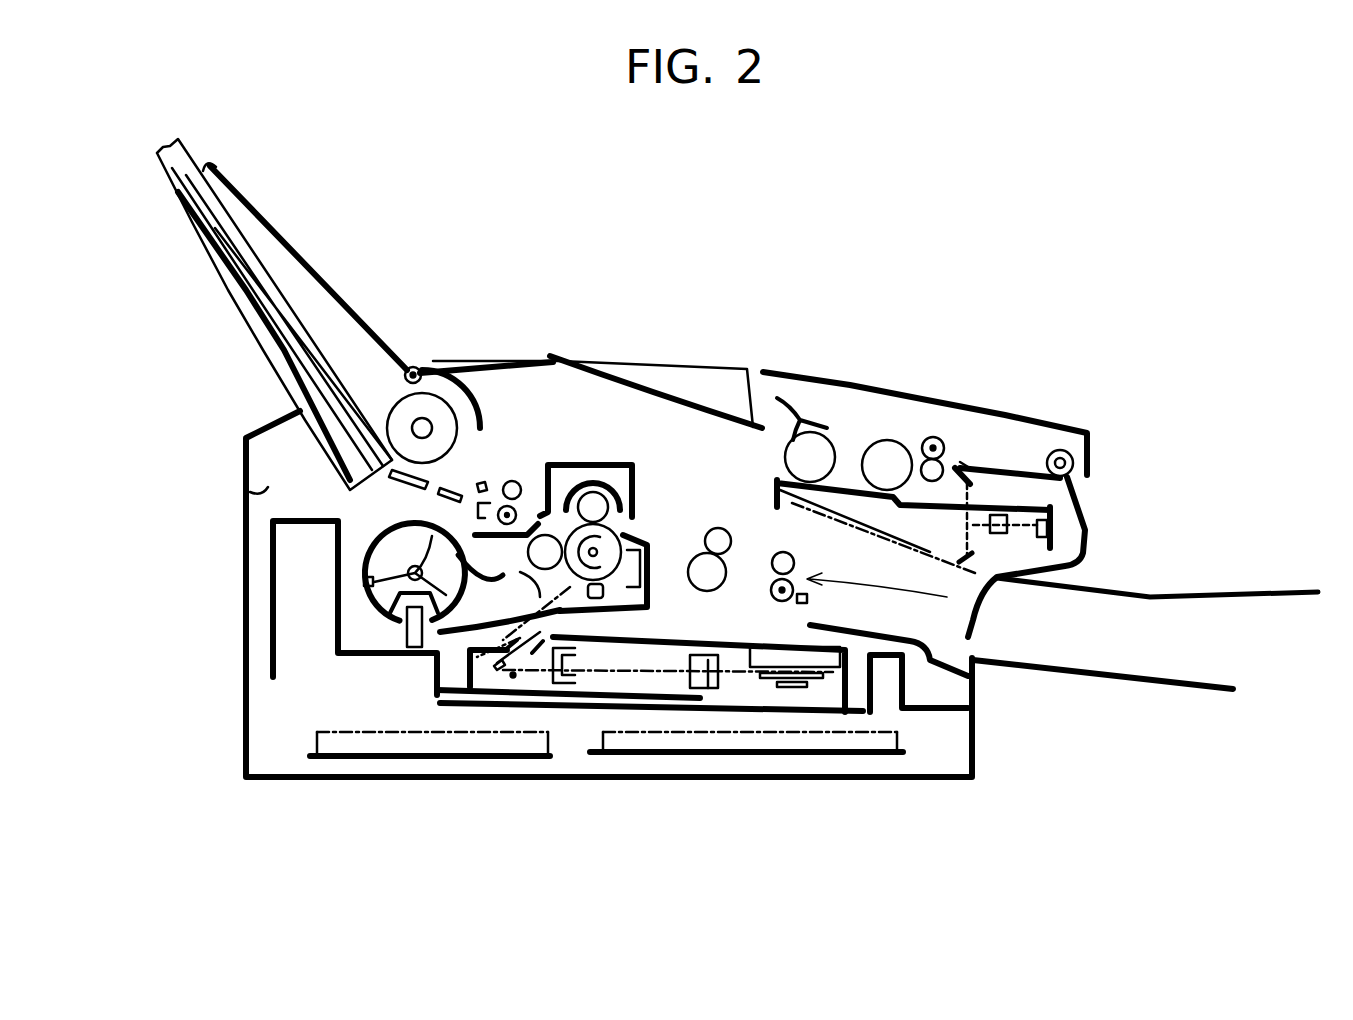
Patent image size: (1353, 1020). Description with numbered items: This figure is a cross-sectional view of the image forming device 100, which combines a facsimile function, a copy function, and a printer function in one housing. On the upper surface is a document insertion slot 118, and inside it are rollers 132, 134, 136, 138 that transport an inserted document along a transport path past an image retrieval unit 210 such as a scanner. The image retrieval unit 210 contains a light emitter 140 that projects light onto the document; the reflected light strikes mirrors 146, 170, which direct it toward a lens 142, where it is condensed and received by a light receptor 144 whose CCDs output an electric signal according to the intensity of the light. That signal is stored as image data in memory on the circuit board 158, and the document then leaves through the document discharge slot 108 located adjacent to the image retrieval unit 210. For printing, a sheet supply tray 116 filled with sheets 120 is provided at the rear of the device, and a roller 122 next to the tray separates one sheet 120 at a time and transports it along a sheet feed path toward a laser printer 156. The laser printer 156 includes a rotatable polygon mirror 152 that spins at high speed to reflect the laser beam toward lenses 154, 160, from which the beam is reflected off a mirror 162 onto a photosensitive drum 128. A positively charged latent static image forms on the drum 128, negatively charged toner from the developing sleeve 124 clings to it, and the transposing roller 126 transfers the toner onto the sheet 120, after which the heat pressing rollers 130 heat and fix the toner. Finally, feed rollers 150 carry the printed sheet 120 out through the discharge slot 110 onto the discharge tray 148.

The image forming device 100 is at (876, 264).
The document discharge slot 108 is at (1073, 477).
The discharge slot 110 is at (973, 649).
The sheet supply tray 116 is at (210, 263).
The document insertion slot 118 is at (767, 423).
The sheet 120 is at (310, 350).
The roller 122 is at (430, 407).
The developing sleeve 124 is at (540, 520).
The transposing roller 126 is at (590, 493).
The photosensitive drum 128 is at (613, 527).
The heat pressing rollers 130 is at (720, 525).
The roller 132 is at (827, 447).
The roller 134 is at (893, 447).
The roller 136 is at (932, 436).
The roller 138 is at (942, 462).
The light emitter 140 is at (965, 468).
The lens 142 is at (1023, 495).
The light receptor 144 is at (1060, 549).
The mirror 146 is at (997, 602).
The discharge tray 148 is at (1183, 677).
The feed rollers 150 is at (975, 665).
The polygon mirror 152 is at (810, 683).
The lens 154 is at (717, 715).
The laser printer 156 is at (638, 630).
The circuit board 158 is at (600, 748).
The lens 160 is at (527, 667).
The mirror 162 is at (500, 660).
The mirror 170 is at (783, 505).
The image retrieval unit 210 is at (1005, 556).